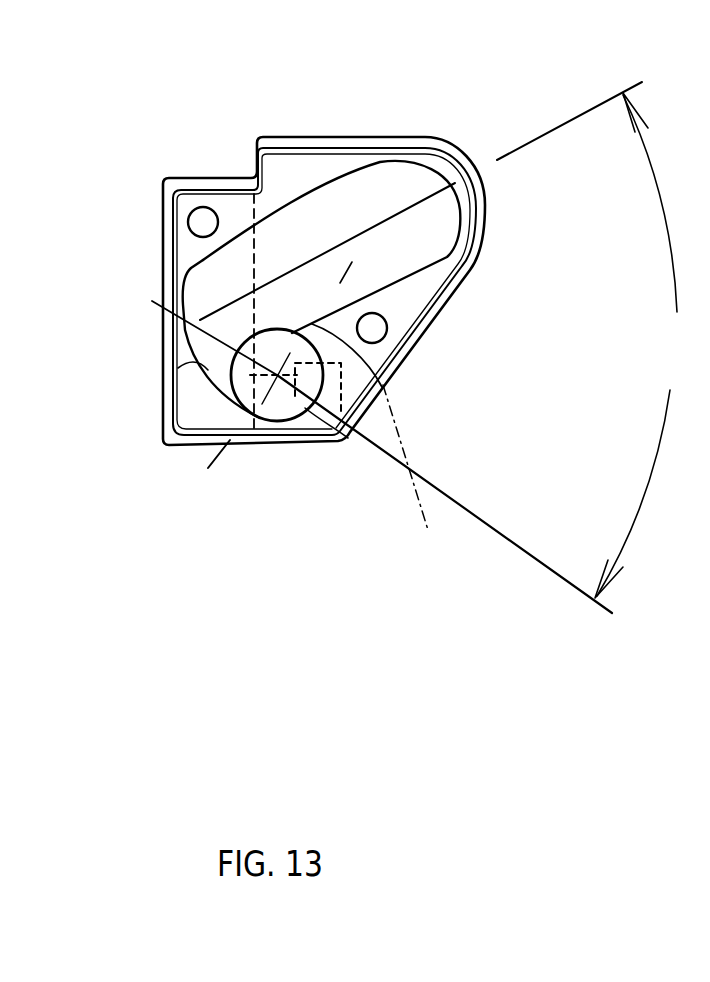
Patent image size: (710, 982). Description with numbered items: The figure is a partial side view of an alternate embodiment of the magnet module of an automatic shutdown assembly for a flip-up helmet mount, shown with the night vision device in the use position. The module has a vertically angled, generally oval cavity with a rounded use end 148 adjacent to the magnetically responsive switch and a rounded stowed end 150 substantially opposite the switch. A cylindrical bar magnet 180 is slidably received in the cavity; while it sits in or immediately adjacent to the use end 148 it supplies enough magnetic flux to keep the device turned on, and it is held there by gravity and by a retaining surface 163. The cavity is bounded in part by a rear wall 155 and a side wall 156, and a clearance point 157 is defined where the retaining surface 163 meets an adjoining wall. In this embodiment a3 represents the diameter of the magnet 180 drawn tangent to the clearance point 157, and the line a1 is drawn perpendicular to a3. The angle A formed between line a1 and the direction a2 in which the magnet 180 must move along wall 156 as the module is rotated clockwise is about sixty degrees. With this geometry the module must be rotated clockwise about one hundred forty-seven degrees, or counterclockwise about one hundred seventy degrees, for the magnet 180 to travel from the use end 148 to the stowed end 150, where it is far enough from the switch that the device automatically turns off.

The use end 148 is at (250, 422).
The stowed end 150 is at (431, 179).
The rear wall 155 is at (178, 368).
The side wall 156 is at (441, 311).
The clearance point 157 is at (434, 477).
The retaining surface 163 is at (373, 443).
The bar magnet 180 is at (298, 412).
The line a1 is at (152, 301).
The direction a2 is at (310, 262).
The magnet diameter a3 is at (192, 488).
The angle A is at (701, 372).